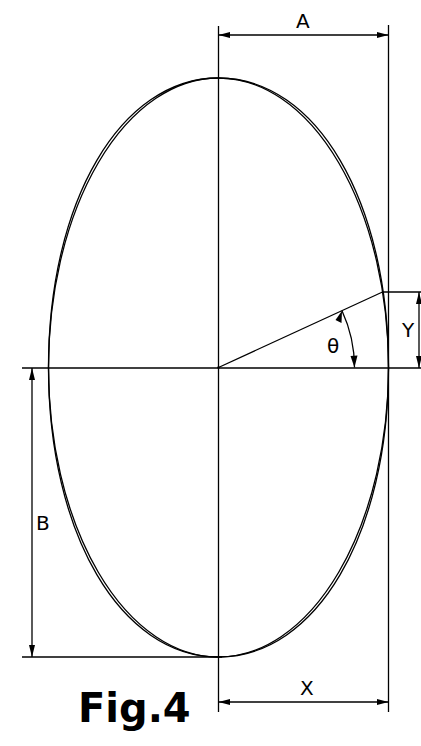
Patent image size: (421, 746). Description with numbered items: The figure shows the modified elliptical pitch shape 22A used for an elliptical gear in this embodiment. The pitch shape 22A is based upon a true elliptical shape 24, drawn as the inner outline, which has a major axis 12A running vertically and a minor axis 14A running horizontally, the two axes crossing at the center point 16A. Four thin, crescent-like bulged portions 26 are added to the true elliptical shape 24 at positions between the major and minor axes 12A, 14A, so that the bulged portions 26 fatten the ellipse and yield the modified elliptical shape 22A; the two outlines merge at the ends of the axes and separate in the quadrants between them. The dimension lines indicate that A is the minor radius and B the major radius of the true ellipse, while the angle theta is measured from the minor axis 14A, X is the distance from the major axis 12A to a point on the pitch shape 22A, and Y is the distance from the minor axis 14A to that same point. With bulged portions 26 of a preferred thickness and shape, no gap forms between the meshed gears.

The major axis 12A is at (221, 236).
The minor axis 14A is at (310, 370).
The center point 16A is at (218, 367).
The modified elliptical pitch shape 22A is at (204, 367).
The true elliptical shape 24 is at (300, 117).
The bulged portions 26 is at (86, 160).